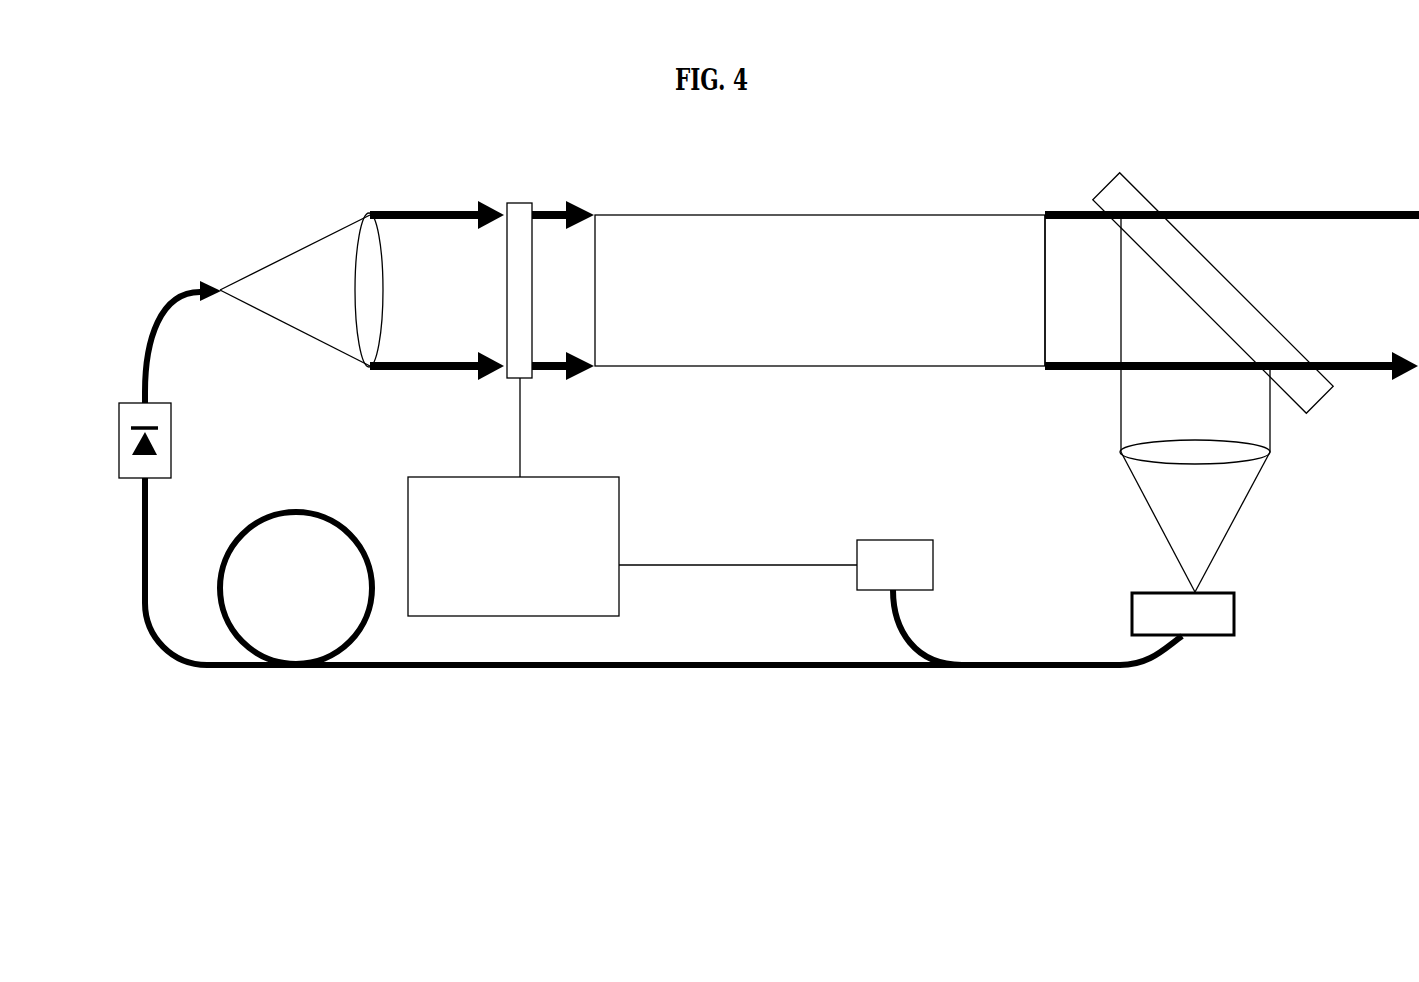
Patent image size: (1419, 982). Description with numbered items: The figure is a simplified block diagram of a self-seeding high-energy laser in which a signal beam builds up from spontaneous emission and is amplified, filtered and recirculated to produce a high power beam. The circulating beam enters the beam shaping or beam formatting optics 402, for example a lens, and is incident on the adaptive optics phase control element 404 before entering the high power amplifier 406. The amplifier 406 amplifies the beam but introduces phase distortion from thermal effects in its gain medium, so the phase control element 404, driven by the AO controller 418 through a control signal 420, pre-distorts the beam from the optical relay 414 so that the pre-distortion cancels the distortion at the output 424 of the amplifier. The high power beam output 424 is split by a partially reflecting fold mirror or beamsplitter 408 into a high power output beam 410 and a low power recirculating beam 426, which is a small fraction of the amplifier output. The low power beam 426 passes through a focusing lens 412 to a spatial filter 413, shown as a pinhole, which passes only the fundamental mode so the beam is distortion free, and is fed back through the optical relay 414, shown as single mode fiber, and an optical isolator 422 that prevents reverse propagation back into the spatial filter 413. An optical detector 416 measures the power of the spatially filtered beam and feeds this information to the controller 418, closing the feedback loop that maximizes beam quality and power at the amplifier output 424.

The beam shaping or beam formatting optics 402 is at (308, 253).
The adaptive optics phase control element 404 is at (518, 203).
The high power amplifier 406 is at (820, 215).
The partially reflecting fold mirror (beamsplitter) 408 is at (1148, 193).
The high power output beam 410 is at (1232, 297).
The focusing lens 412 is at (1257, 483).
The spatial filter 413 is at (1234, 610).
The optical relay 414 is at (969, 627).
The optical detector 416 is at (933, 567).
The AO controller 418 is at (620, 478).
The control signal 420 is at (520, 453).
The optical isolator 422 is at (171, 412).
The output of the amplifier 424 is at (1073, 343).
The low power recirculating beam 426 is at (1195, 333).